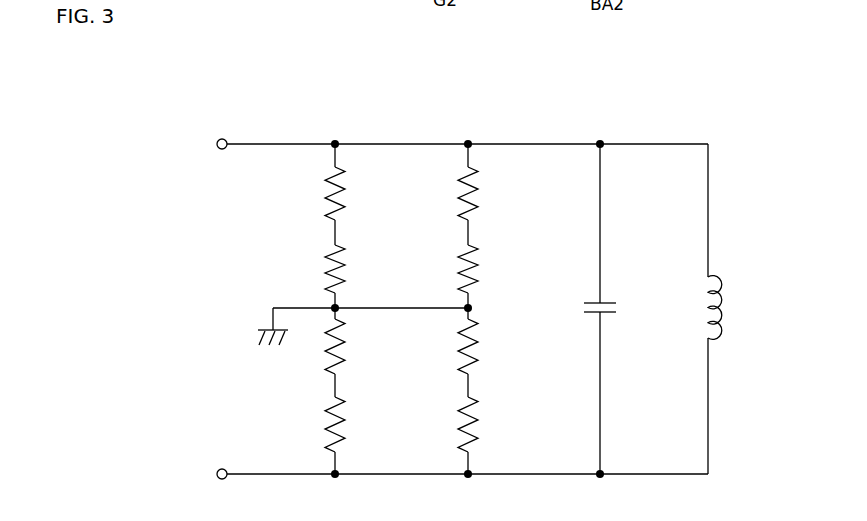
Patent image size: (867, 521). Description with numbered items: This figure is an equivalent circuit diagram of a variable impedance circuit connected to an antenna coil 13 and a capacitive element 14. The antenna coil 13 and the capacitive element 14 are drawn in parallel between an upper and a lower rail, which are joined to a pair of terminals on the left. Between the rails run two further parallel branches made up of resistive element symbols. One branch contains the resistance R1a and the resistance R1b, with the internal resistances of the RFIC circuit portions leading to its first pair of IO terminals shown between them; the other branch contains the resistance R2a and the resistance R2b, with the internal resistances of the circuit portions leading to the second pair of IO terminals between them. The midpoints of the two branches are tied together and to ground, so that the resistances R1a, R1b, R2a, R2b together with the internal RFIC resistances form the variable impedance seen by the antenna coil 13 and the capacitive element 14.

The antenna coil 13 is at (726, 300).
The capacitive element 14 is at (618, 308).
The resistance R1a is at (489, 193).
The resistance R1b is at (490, 424).
The resistance R2a is at (355, 193).
The resistance R2b is at (356, 424).